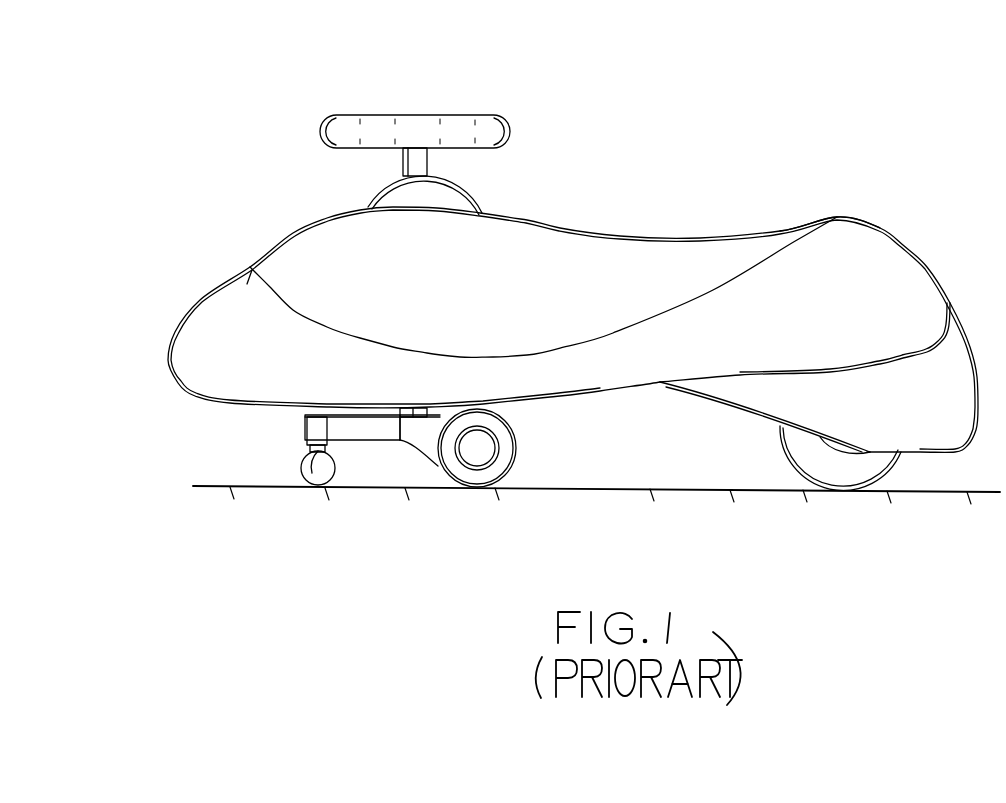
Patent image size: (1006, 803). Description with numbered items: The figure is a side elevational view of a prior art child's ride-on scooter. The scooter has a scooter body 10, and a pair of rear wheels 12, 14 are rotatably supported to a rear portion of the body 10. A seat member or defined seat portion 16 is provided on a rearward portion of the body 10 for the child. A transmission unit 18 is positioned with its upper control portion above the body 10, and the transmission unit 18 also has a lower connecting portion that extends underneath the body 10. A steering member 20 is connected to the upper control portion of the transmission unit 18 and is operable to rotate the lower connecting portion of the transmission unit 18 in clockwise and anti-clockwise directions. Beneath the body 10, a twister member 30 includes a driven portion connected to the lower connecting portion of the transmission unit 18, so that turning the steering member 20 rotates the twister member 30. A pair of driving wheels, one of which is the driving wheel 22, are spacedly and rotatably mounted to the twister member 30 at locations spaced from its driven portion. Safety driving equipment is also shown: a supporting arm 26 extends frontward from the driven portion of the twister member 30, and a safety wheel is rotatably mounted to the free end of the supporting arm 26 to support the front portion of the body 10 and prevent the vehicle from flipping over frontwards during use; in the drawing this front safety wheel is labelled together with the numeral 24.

The scooter body 10 is at (618, 264).
The rear wheel 12 is at (870, 463).
The rear wheel 14 is at (840, 457).
The seat portion 16 is at (791, 220).
The transmission unit 18 is at (413, 166).
The steering member 20 is at (477, 120).
The driving wheel 22 is at (515, 455).
The caster wheel 24 is at (300, 458).
The supporting arm 26 is at (370, 430).
The twister member 30 is at (428, 447).